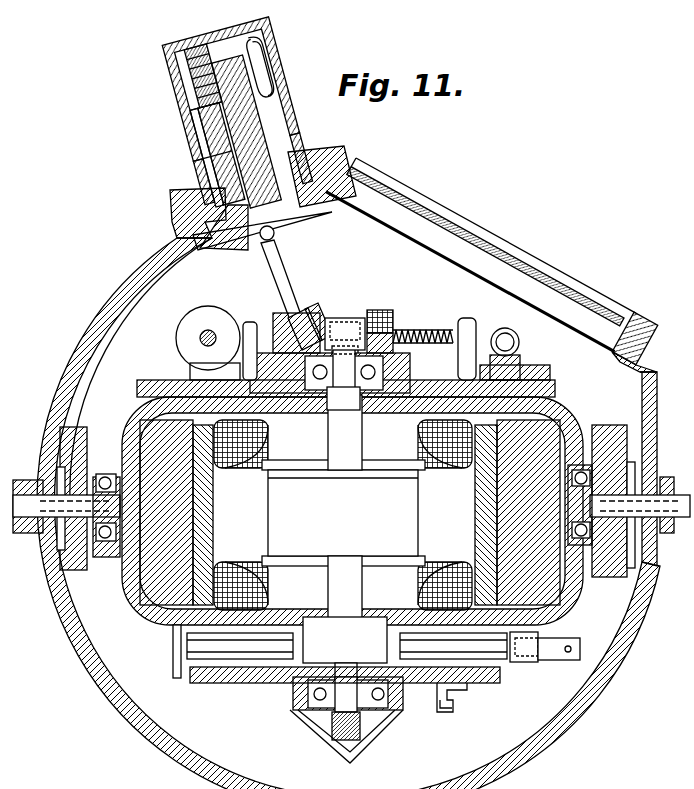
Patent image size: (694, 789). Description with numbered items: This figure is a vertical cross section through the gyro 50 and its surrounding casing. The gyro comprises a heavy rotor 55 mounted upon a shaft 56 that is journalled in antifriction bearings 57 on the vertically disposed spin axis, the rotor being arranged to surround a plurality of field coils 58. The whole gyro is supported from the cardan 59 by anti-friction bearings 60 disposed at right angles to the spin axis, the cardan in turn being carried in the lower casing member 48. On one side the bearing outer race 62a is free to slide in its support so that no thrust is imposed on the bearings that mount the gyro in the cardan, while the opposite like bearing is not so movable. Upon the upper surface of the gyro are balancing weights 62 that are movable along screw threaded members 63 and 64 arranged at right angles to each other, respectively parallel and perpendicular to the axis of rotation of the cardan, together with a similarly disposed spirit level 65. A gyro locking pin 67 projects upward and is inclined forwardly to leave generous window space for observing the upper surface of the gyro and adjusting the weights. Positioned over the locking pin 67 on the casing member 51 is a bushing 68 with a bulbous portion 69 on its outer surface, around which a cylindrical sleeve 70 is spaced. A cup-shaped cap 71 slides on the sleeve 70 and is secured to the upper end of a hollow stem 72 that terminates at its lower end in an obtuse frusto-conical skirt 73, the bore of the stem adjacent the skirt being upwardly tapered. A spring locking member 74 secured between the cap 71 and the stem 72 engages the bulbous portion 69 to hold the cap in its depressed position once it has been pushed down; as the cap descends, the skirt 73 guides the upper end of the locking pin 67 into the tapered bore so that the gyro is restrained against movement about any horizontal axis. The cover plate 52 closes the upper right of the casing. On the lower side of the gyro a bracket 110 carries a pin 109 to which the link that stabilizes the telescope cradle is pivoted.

The lower casing member 48 is at (548, 742).
The casing member 51 is at (112, 292).
The cover plate 52 is at (508, 252).
The bushing 68 is at (307, 152).
The bulbous portion 69 is at (185, 163).
The cylindrical sleeve 70 is at (269, 125).
The cup-shaped cap 71 is at (230, 89).
The hollow stem 72 is at (181, 91).
The spring locking member 74 is at (279, 61).
The frusto-conical skirt 73 is at (297, 217).
The gyro locking pin 67 is at (284, 284).
The gyro 50 is at (168, 380).
The balancing weights 62 is at (216, 318).
The screw threaded member 63 is at (200, 338).
The screw threaded member 64 is at (420, 342).
The spirit level 65 is at (520, 342).
The rotor 55 is at (138, 402).
The field coils 58 is at (270, 444).
The shaft 56 is at (362, 448).
The antifriction bearings 57 is at (318, 714).
The bracket 110 is at (455, 692).
The pin 109 is at (447, 710).
The bearing outer race 62a is at (90, 445).
The cardan 59 is at (617, 425).
The anti-friction bearings 60 is at (100, 565).